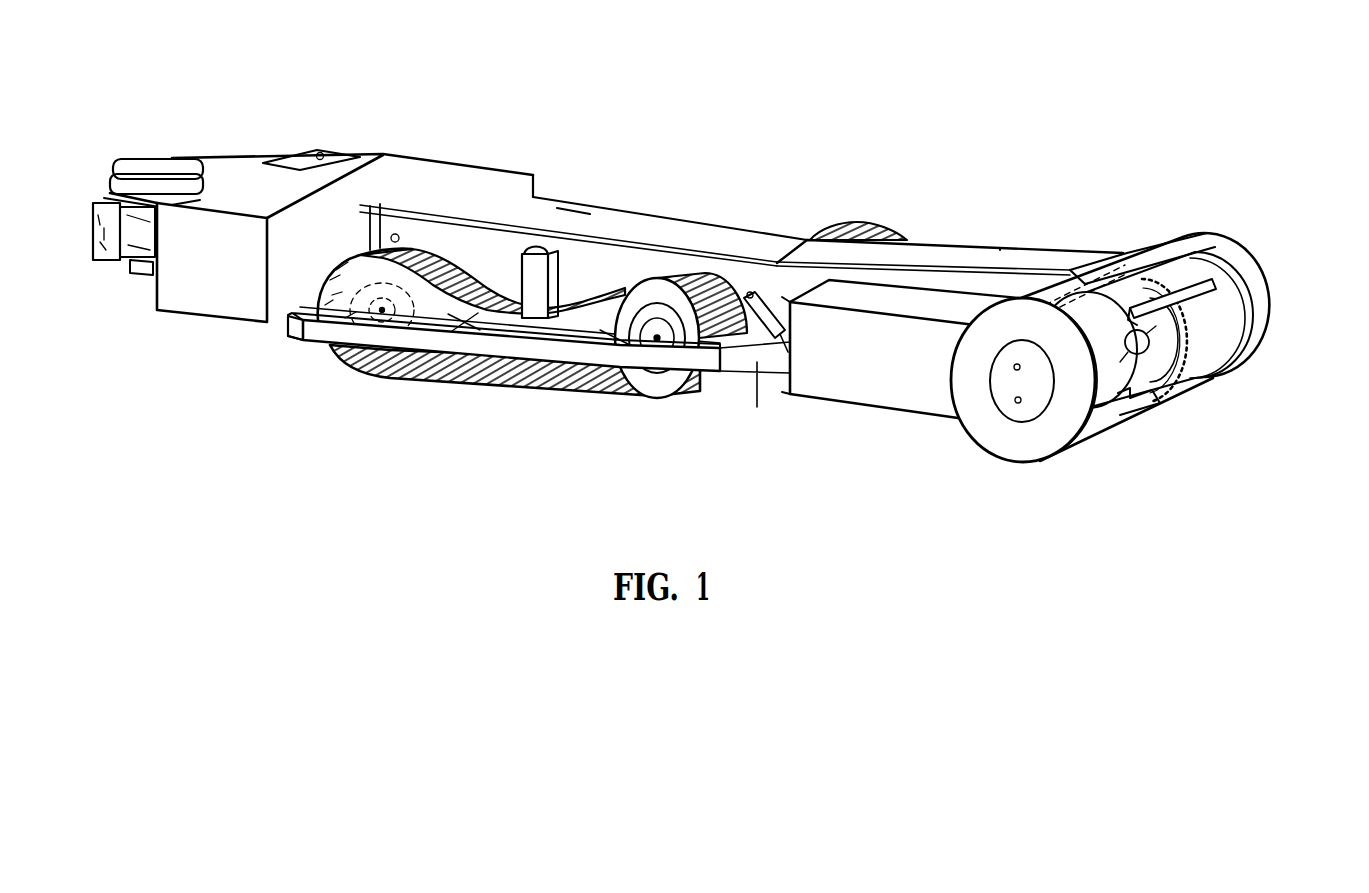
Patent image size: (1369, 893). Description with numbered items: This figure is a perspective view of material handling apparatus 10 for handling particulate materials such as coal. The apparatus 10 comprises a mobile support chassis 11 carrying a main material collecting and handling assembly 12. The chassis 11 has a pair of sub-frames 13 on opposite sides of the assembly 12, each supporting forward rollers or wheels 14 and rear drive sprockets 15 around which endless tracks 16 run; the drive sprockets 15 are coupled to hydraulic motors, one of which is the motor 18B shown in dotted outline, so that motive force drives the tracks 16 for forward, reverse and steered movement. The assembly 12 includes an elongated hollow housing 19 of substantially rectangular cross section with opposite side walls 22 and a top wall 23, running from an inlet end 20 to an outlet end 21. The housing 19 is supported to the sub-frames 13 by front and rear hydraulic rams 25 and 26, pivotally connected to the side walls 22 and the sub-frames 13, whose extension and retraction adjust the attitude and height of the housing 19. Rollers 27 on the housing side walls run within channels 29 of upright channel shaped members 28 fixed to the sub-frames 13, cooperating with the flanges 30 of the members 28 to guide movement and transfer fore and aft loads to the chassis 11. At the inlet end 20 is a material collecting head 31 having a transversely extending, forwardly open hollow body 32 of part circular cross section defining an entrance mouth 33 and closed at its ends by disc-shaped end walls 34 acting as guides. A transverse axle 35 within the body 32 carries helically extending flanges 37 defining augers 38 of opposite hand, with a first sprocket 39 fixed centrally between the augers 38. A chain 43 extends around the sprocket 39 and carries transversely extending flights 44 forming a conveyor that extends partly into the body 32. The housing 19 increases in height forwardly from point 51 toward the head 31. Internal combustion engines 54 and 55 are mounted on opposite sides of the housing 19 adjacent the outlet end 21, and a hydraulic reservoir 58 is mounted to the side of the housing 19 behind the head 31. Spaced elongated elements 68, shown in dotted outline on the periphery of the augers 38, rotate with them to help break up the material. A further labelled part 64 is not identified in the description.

The material handling apparatus 10 is at (662, 145).
The mobile support chassis 11 is at (312, 376).
The main material collecting and handling assembly 12 is at (762, 208).
The sub-frames 13 is at (278, 353).
The forward rollers or wheels 14 is at (665, 385).
The rear drive sprockets 15 is at (263, 327).
The endless tracks 16 is at (490, 398).
The hydraulic motor 18B is at (389, 318).
The elongated hollow housing 19 is at (578, 210).
The inlet end 20 is at (1280, 213).
The outlet end 21 is at (90, 165).
The side walls 22 is at (495, 243).
The top wall 23 is at (702, 230).
The front hydraulic rams 25 is at (764, 355).
The rear hydraulic rams 26 is at (390, 228).
The rollers 27 is at (540, 258).
The channel shaped members 28 is at (568, 262).
The channels 29 is at (556, 250).
The flanges 30 is at (567, 287).
The material collecting head 31 is at (1163, 200).
The hollow body 32 is at (1138, 255).
The entrance mouth 33 is at (1212, 382).
The end disc-shaped walls 34 is at (1272, 300).
The transverse shaft or axle 35 is at (1170, 385).
The helically extending flanges 37 is at (1256, 318).
The augers 38 is at (1260, 362).
The first sprocket 39 is at (1197, 390).
The chain 43 is at (1160, 245).
The flights 44 is at (1142, 420).
The point 51 is at (808, 245).
The internal combustion engine 54 is at (117, 273).
The internal combustion engine 55 is at (302, 132).
The hydraulic reservoir 58 is at (884, 398).
The gear box 64 is at (168, 312).
The spaced elongated elements 68 is at (1060, 300).